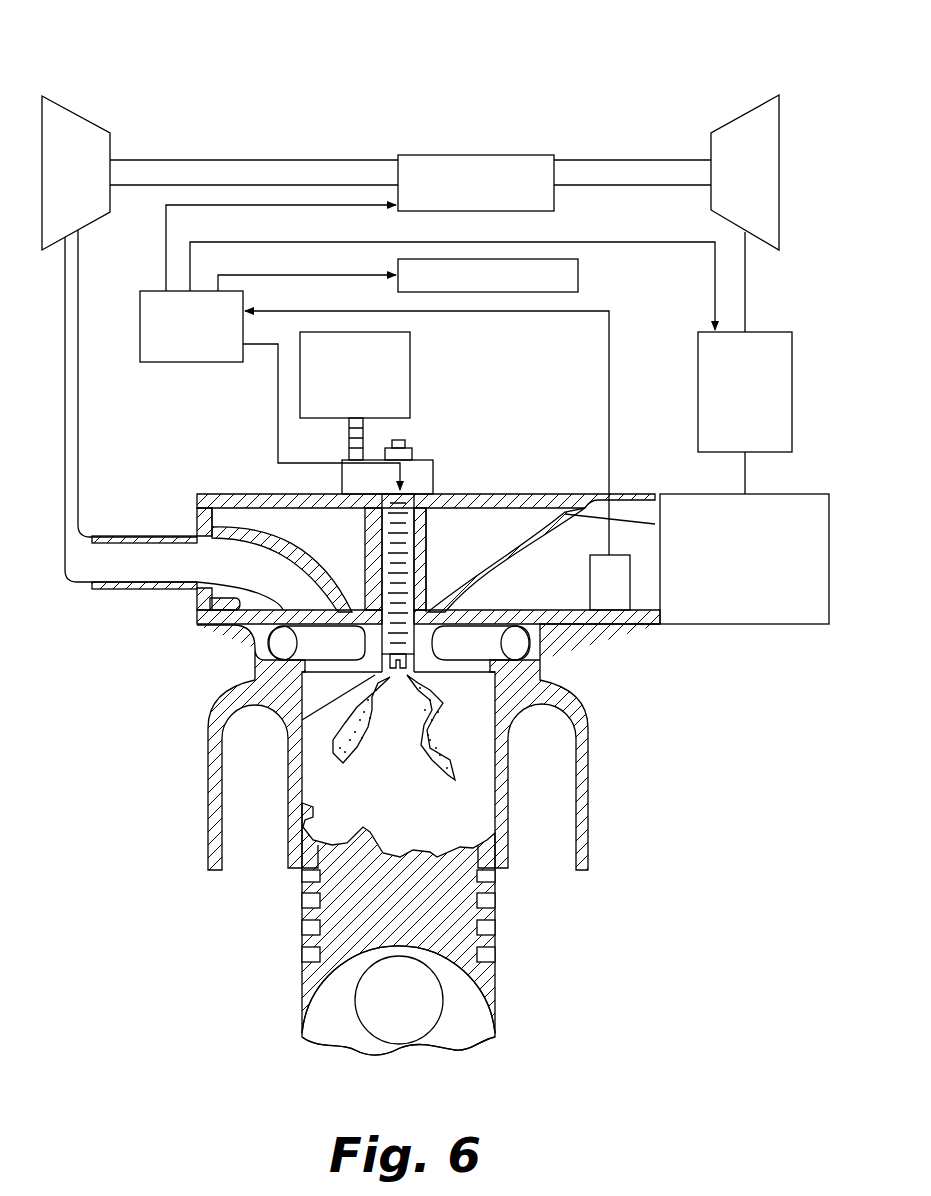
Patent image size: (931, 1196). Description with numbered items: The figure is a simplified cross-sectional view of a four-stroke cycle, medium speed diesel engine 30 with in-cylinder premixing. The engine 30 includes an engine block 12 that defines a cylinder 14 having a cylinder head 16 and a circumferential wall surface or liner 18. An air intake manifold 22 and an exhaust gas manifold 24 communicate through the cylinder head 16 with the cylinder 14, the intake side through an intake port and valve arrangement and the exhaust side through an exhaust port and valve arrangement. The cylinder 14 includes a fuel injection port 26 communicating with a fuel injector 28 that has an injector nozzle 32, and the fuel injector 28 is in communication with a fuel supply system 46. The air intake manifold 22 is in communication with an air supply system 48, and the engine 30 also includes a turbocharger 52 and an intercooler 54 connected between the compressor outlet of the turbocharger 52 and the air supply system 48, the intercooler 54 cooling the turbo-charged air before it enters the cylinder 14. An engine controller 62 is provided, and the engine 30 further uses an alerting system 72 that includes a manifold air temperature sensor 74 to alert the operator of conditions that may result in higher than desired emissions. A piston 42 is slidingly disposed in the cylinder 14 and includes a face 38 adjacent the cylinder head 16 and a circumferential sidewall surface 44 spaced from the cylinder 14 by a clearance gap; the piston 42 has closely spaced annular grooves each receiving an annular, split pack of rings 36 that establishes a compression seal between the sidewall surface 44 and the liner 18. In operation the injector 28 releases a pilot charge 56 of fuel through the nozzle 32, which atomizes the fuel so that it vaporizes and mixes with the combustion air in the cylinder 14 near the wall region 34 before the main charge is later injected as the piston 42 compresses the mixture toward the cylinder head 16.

The engine 30 is at (178, 90).
The turbocharger 52 is at (410, 172).
The engine controller 62 is at (427, 380).
The alerting system 72 is at (488, 275).
The fuel supply system 46 is at (366, 413).
The intercooler 54 is at (745, 363).
The air supply system 48 is at (744, 559).
The manifold air temperature sensor 74 is at (610, 582).
The cylinder head 16 is at (530, 662).
The exhaust gas manifold 24 is at (218, 568).
The air intake manifold 22 is at (487, 642).
The fuel injector 28 is at (400, 590).
The fuel injection port 26 is at (418, 677).
The cylinder 14 is at (398, 737).
The injector nozzle 32 is at (400, 677).
The cylinder wall surface 34 is at (290, 753).
The pilot charge 56 is at (340, 757).
The cylinder liner 18 is at (300, 828).
The engine block 12 is at (508, 838).
The piston face 38 is at (353, 834).
The circumferential sidewall surface 44 is at (500, 842).
The piston 42 is at (476, 915).
The pack of rings 36 is at (302, 955).